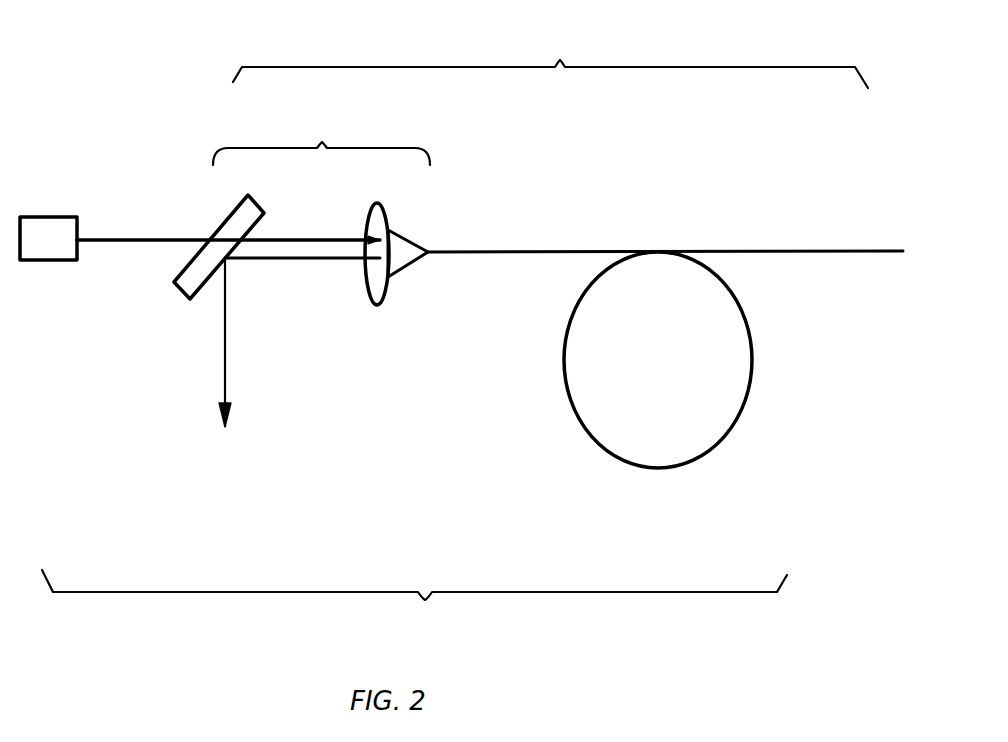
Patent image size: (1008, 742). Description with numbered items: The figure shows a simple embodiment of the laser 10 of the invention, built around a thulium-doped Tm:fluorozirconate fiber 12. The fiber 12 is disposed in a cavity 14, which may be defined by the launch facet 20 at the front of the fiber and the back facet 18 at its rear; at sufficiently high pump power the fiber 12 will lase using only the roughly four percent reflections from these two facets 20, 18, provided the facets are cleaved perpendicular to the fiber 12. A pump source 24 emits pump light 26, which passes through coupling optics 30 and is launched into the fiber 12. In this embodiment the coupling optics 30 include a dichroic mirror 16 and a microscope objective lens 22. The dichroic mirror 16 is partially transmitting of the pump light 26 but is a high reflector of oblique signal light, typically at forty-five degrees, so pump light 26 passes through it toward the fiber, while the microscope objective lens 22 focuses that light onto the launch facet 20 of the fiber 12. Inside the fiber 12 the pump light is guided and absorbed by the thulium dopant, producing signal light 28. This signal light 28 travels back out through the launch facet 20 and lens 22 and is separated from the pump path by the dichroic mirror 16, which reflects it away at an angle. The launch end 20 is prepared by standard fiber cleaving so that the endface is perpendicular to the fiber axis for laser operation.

The laser 10 is at (414, 607).
The Tm:fluorozirconate fiber 12 is at (566, 383).
The cavity 14 is at (550, 57).
The dichroic mirror 16 is at (224, 222).
The back facet 18 is at (884, 253).
The launch facet 20 is at (428, 254).
The microscope objective lens 22 is at (383, 206).
The pump source 24 is at (56, 256).
The pump light 26 is at (157, 241).
The signal light 28 is at (227, 326).
The coupling optics 30 is at (321, 136).